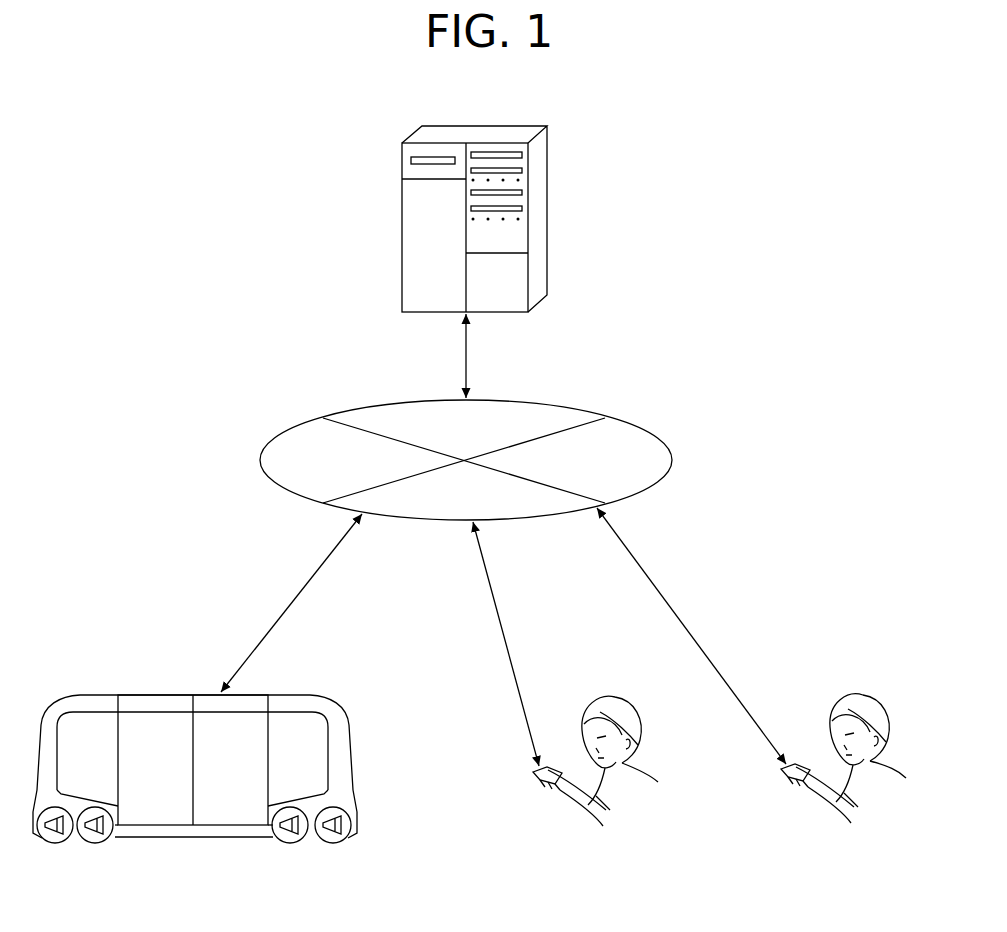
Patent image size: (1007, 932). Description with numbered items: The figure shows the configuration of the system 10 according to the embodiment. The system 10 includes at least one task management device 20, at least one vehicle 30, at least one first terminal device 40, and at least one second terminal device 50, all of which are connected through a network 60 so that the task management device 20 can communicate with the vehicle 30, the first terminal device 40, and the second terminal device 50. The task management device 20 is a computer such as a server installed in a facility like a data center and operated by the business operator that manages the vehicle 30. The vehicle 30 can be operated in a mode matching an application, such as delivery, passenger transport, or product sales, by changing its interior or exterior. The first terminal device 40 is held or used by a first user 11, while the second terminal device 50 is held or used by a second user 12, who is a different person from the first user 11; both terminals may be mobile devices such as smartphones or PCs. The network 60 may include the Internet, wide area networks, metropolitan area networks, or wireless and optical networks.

The system 10 is at (716, 285).
The task management device 20 is at (540, 217).
The network 60 is at (672, 460).
The vehicle 30 is at (202, 840).
The first user 11 is at (630, 720).
The second user 12 is at (880, 713).
The first terminal device 40 is at (530, 777).
The second terminal device 50 is at (783, 770).